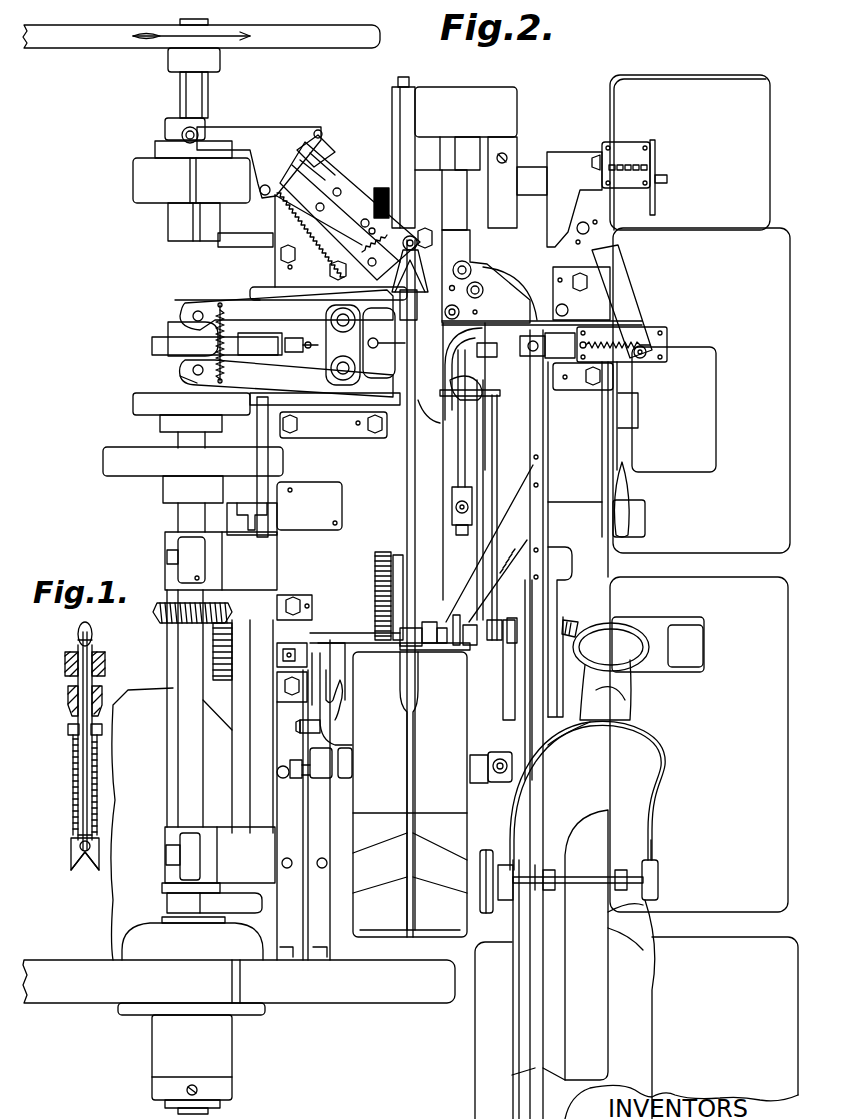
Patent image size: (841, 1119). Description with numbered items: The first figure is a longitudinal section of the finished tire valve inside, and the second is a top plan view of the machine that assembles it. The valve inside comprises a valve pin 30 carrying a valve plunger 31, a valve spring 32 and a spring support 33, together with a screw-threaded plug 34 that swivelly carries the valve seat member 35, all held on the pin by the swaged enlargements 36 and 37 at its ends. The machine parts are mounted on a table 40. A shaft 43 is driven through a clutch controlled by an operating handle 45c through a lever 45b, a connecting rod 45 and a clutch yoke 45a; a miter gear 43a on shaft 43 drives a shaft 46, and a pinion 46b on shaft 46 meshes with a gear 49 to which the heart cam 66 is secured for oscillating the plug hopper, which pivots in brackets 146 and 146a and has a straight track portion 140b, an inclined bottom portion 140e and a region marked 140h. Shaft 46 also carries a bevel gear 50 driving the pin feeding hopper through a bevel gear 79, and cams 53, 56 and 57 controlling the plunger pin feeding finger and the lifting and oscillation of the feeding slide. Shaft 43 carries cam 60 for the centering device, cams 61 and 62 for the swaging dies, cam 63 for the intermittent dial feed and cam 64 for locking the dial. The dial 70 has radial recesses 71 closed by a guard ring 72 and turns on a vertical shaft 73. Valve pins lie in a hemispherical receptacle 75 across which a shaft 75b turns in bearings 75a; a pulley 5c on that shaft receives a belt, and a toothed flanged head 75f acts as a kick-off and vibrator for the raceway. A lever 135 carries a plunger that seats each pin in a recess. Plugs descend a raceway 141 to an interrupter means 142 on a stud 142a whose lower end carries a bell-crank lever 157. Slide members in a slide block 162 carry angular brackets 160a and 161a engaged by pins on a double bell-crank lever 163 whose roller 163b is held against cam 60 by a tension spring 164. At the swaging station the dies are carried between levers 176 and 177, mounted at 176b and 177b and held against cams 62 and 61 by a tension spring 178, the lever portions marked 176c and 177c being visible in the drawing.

In FIG. 1, the valve pin 30 is at (73, 770).
In FIG. 1, the valve plunger 31 is at (68, 730).
In FIG. 1, the valve spring 32 is at (73, 800).
In FIG. 1, the spring support 33 is at (71, 850).
In FIG. 1, the screw-threaded plug 34 is at (65, 660).
In FIG. 1, the valve seat member 35 is at (68, 698).
In FIG. 1, the swaged enlargement 36 is at (78, 862).
In FIG. 1, the swaged enlargement 37 is at (78, 634).
In FIG. 2, the table 40 is at (704, 585).
In FIG. 2, the shaft 43 is at (190, 756).
In FIG. 2, the miter gear 43a is at (172, 623).
In FIG. 2, the connecting rod 45 is at (240, 773).
In FIG. 2, the clutch yoke 45a is at (238, 912).
In FIG. 2, the lever 45b is at (265, 508).
In FIG. 2, the operating handle 45c is at (630, 480).
In FIG. 2, the shaft 46 is at (326, 640).
In FIG. 2, the pinion 46b is at (213, 658).
In FIG. 2, the gear 49 is at (375, 575).
In FIG. 2, the bevel gear 50 is at (570, 620).
In FIG. 2, the cam 53 is at (506, 712).
In FIG. 2, the cam 56 is at (455, 645).
In FIG. 2, the cam 57 is at (434, 610).
In FIG. 2, the pulley 5c is at (486, 850).
In FIG. 2, the cam 60 is at (182, 133).
In FIG. 2, the cam 61 is at (180, 325).
In FIG. 2, the cam 62 is at (175, 350).
In FIG. 2, the cam 63 is at (103, 458).
In FIG. 2, the cam 64 is at (133, 402).
In FIG. 2, the heart cam 66 is at (398, 556).
In FIG. 2, the dial 70 is at (474, 275).
In FIG. 2, the radial recesses 71 is at (528, 286).
In FIG. 2, the guard ring 72 is at (528, 287).
In FIG. 2, the vertical shaft 73 is at (442, 348).
In FIG. 2, the pin receptacle 75 is at (666, 758).
In FIG. 2, the bearings 75a is at (661, 878).
In FIG. 2, the shaft 75b is at (520, 940).
In FIG. 2, the flanged end 75f is at (590, 895).
In FIG. 2, the bevel gear 79 is at (600, 620).
In FIG. 2, the lever 135 is at (466, 213).
In FIG. 2, the straight track portion 140b is at (405, 824).
In FIG. 2, the inclined bottom portion 140e is at (410, 917).
In FIG. 2, the box section 140h is at (405, 855).
In FIG. 2, the raceway 141 is at (416, 540).
In FIG. 2, the interrupter means 142 is at (348, 242).
In FIG. 2, the stud 142a is at (394, 150).
In FIG. 2, the bracket 146 is at (500, 782).
In FIG. 2, the bracket 146a is at (330, 775).
In FIG. 2, the bell-crank lever 157 is at (330, 270).
In FIG. 2, the angular bracket 160a is at (262, 181).
In FIG. 2, the angular bracket 161a is at (322, 144).
In FIG. 2, the slide block 162 is at (345, 200).
In FIG. 2, the double bell-crank lever 163 is at (265, 135).
In FIG. 2, the roller 163b is at (182, 122).
In FIG. 2, the tension spring 164 is at (318, 235).
In FIG. 2, the lever 176 is at (286, 378).
In FIG. 2, the pivot 176b is at (333, 378).
In FIG. 2, the lever end 176c is at (185, 376).
In FIG. 2, the lever 177 is at (286, 310).
In FIG. 2, the pivot 177b is at (331, 318).
In FIG. 2, the lever end 177c is at (185, 305).
In FIG. 2, the tension spring 178 is at (223, 365).